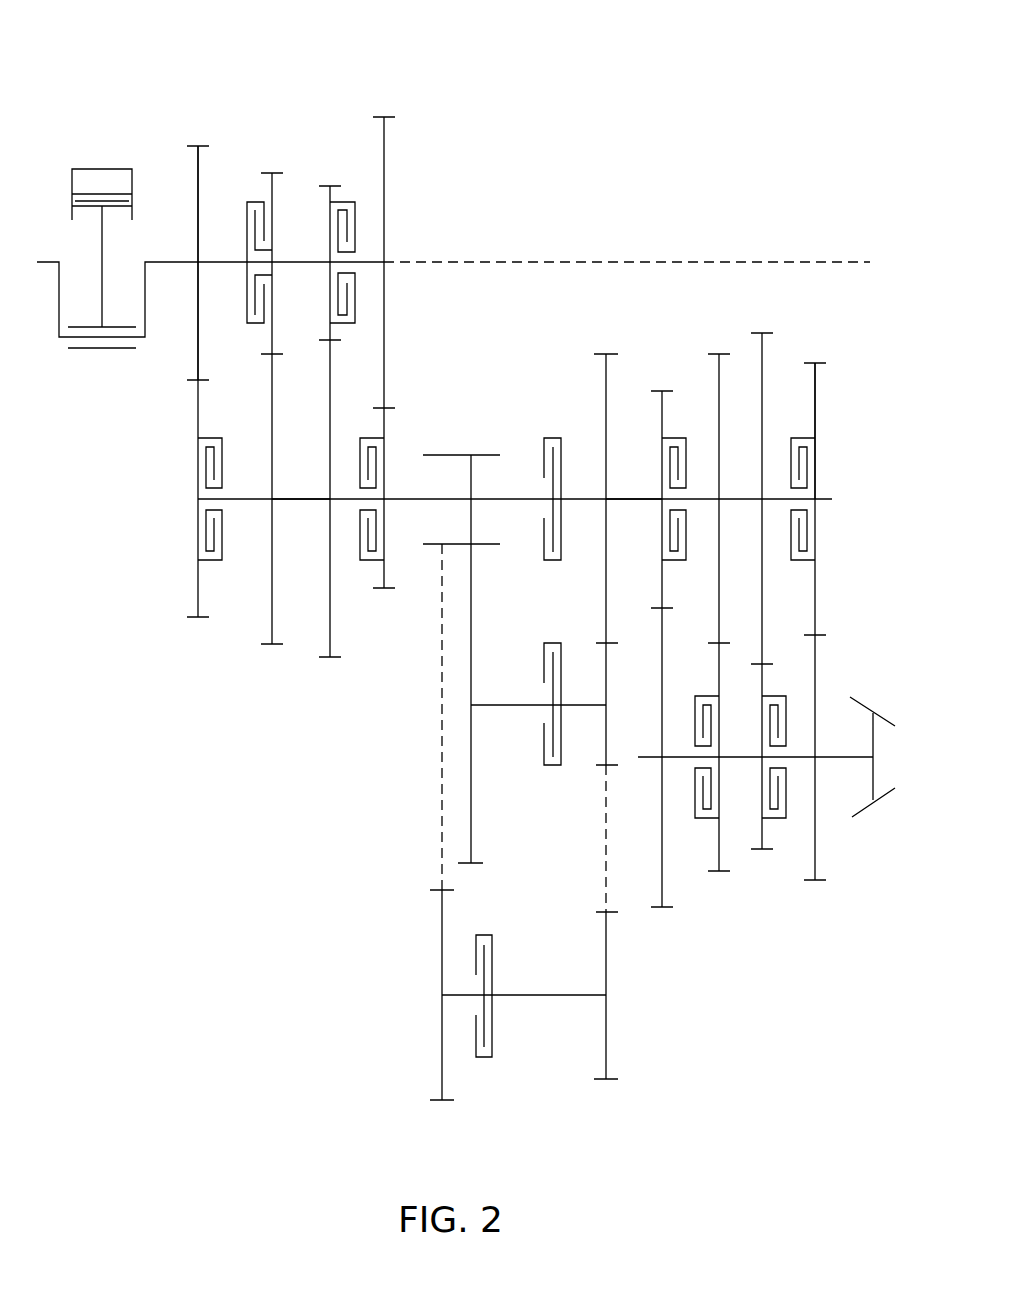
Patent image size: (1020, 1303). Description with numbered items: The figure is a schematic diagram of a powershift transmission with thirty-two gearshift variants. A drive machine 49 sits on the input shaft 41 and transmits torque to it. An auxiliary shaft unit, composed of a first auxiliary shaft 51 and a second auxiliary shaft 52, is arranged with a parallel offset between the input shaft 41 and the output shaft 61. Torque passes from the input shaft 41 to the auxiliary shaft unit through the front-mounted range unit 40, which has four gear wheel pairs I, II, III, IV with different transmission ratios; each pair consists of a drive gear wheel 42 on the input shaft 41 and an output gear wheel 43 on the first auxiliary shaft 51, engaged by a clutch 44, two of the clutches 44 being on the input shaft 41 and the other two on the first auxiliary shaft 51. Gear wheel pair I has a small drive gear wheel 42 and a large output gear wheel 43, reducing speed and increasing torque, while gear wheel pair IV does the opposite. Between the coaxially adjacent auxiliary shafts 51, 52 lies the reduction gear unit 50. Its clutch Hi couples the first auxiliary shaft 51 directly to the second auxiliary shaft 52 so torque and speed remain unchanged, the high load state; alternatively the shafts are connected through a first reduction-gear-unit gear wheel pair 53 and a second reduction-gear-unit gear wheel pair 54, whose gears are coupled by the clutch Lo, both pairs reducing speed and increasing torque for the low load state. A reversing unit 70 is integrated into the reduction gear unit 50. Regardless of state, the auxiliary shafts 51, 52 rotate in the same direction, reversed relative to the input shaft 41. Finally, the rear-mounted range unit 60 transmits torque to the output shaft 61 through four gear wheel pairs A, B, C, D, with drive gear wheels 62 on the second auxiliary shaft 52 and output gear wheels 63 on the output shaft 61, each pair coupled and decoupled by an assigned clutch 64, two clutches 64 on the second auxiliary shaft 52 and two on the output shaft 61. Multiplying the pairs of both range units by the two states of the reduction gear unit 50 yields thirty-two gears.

The front-mounted range unit 40 is at (182, 494).
The input shaft 41 is at (372, 267).
The drive gear wheel 42 is at (198, 195).
The output gear wheel 43 is at (198, 575).
The clutch 44 is at (215, 562).
The drive machine 49 is at (85, 169).
The reduction gear unit 50 is at (462, 663).
The first auxiliary shaft 51 is at (297, 500).
The second auxiliary shaft 52 is at (628, 499).
The first reduction-gear-unit gear wheel pair 53 is at (462, 803).
The second reduction-gear-unit gear wheel pair 54 is at (605, 342).
The rear-mounted range unit 60 is at (835, 585).
The output shaft 61 is at (838, 757).
The drive gear wheel 62 is at (815, 395).
The output gear wheel 63 is at (815, 845).
The clutch 64 is at (815, 475).
The reversing unit 70 is at (430, 995).
The gear wheel pair I is at (329, 170).
The gear wheel pair II is at (273, 152).
The gear wheel pair III is at (202, 132).
The gear wheel pair IV is at (388, 103).
The clutch Hi is at (548, 438).
The clutch Lo is at (548, 765).
The gear wheel pair A is at (719, 897).
The gear wheel pair B is at (662, 933).
The gear wheel pair C is at (818, 905).
The gear wheel pair D is at (763, 880).